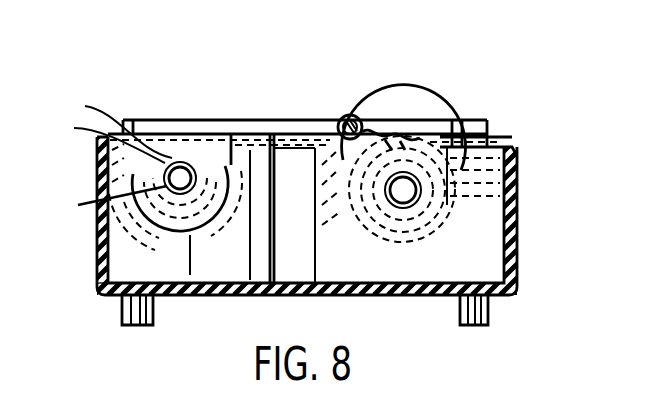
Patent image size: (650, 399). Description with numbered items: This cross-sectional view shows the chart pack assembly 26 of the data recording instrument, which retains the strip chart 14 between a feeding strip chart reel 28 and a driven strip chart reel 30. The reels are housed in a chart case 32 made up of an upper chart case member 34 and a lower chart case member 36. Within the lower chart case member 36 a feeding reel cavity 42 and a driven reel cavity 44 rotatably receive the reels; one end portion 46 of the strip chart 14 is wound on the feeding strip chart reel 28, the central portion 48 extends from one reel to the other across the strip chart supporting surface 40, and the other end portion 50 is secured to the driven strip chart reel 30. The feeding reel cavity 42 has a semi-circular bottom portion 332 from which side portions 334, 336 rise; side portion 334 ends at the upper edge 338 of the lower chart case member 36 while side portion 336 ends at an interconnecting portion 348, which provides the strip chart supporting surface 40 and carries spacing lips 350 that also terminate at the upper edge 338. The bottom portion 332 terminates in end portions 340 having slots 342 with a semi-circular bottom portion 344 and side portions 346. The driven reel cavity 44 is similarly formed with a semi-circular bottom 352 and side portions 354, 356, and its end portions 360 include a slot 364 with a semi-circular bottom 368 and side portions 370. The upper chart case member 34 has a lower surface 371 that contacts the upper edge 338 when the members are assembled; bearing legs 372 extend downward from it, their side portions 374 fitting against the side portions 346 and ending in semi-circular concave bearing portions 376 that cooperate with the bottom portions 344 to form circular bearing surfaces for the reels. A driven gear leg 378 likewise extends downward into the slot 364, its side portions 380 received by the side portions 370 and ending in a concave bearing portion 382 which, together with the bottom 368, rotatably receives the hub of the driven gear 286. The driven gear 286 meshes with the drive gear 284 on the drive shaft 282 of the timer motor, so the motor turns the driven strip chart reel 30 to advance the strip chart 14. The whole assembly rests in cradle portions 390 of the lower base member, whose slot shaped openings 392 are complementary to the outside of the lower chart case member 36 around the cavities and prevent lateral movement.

The strip chart 14 is at (131, 105).
The chart pack assembly 26 is at (237, 131).
The feeding strip chart reel 28 is at (104, 212).
The driven strip chart reel 30 is at (412, 197).
The chart case 32 is at (165, 128).
The upper chart case member 34 is at (482, 122).
The lower chart case member 36 is at (148, 222).
The strip chart supporting surface 40 is at (323, 135).
The feeding reel cavity 42 is at (200, 238).
The driven reel cavity 44 is at (410, 262).
The end portion of the strip chart 46 is at (106, 150).
The central portion of the strip chart 48 is at (315, 140).
The other end portion of the strip chart 50 is at (505, 140).
The drive shaft 282 is at (357, 127).
The drive gear 284 is at (378, 135).
The driven gear 286 is at (427, 136).
The bottom portion 332 is at (96, 262).
The side portion 334 is at (106, 176).
The side portion 336 is at (318, 240).
The upper edge 338 is at (133, 122).
The end portions 340 is at (222, 135).
The slots 342 is at (172, 136).
The semi-circular bottom portion 344 is at (142, 235).
The side portions 346 is at (104, 123).
The interconnecting portion 348 is at (350, 115).
The spacing lips 350 is at (288, 140).
The bottom 352 is at (392, 262).
The side portion 354 is at (372, 240).
The side portion 356 is at (505, 152).
The end portions 360 is at (445, 233).
The slot 364 is at (507, 120).
The semi-circular bottom 368 is at (368, 252).
The side portions 370 is at (500, 195).
The lower surface 371 is at (478, 122).
The bearing legs 372 is at (205, 131).
The side portions 374 is at (96, 137).
The semi-circular concave bearing portions 376 is at (318, 172).
The driven gear leg 378 is at (455, 178).
The side portions 380 is at (318, 192).
The semi-circular concave bearing portion 382 is at (318, 212).
The cradle portions 390 is at (118, 243).
The slot shaped openings 392 is at (545, 172).